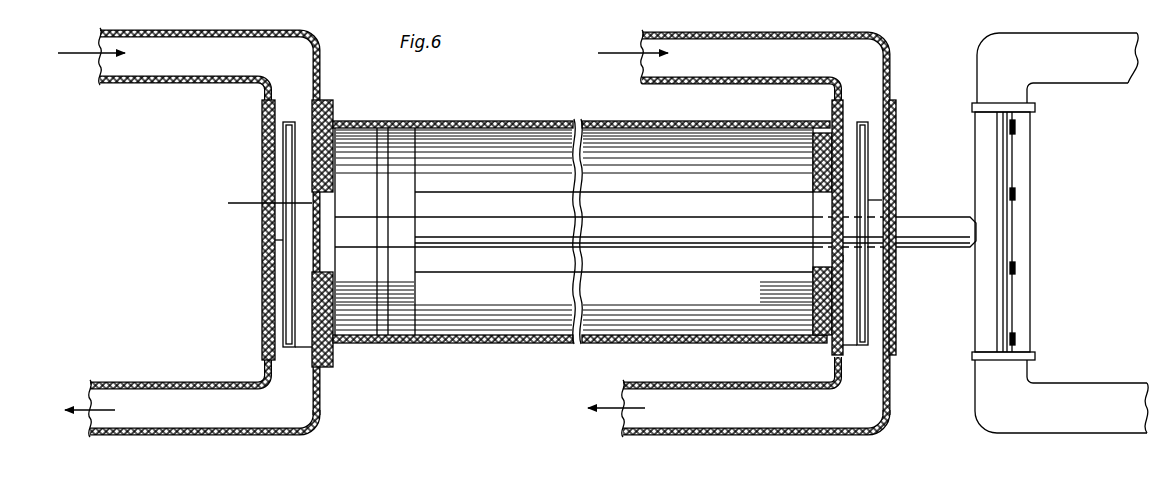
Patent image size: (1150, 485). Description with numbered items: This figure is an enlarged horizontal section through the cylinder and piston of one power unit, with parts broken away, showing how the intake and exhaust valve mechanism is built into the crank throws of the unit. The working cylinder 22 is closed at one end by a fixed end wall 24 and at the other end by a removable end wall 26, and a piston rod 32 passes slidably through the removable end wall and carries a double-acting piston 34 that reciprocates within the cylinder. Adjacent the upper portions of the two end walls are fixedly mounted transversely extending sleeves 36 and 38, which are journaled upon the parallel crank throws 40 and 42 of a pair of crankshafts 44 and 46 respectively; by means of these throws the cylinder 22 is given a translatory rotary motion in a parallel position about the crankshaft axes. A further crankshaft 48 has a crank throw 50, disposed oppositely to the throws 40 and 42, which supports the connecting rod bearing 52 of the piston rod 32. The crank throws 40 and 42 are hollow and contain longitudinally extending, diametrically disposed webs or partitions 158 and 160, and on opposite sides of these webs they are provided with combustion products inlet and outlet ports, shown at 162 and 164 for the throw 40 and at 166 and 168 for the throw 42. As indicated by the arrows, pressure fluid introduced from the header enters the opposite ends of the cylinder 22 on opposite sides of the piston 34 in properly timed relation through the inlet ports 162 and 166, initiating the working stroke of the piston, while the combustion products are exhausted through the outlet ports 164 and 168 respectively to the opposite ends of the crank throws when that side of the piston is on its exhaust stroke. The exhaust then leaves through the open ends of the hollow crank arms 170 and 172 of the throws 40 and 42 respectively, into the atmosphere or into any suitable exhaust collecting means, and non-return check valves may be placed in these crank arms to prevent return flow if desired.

The cylinder 22 is at (487, 123).
The fixed end wall 24 is at (338, 163).
The removable end wall 26 is at (707, 231).
The piston rod 32 is at (476, 225).
The piston 34 is at (400, 181).
The sleeve 36 is at (260, 156).
The sleeve 38 is at (896, 156).
The crank throw 40 is at (322, 96).
The crank throw 42 is at (893, 98).
The crankshaft 44 is at (168, 84).
The crankshaft 46 is at (890, 39).
The crankshaft 48 is at (1094, 70).
The crank throw 50 is at (992, 376).
The connecting rod bearing 52 is at (1023, 182).
The web 158 is at (298, 240).
The web 160 is at (866, 263).
The inlet port 162 is at (251, 203).
The outlet port 164 is at (300, 225).
The inlet port 166 is at (873, 201).
The outlet port 168 is at (843, 258).
The hollow crank arm 170 is at (200, 437).
The hollow crank arm 172 is at (681, 437).